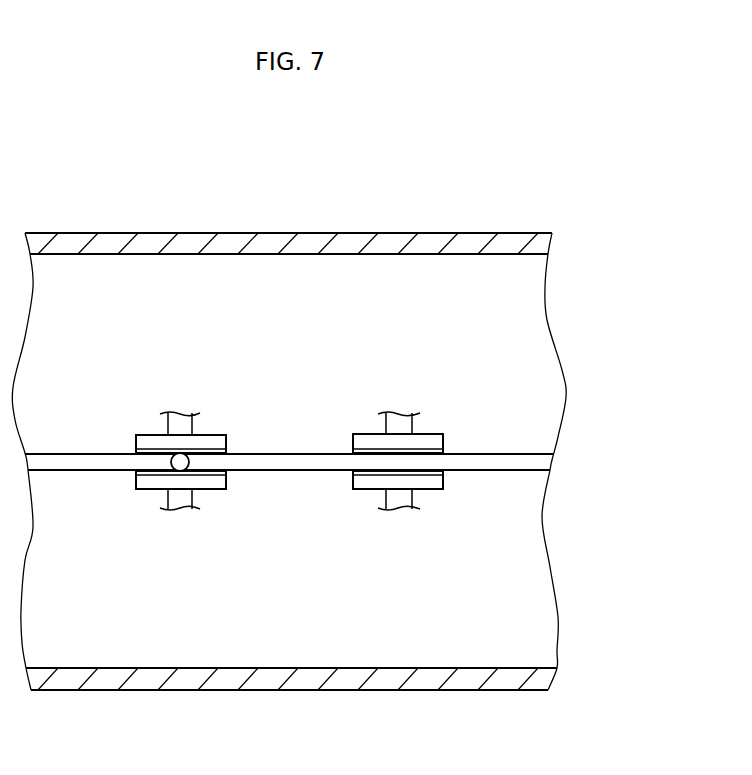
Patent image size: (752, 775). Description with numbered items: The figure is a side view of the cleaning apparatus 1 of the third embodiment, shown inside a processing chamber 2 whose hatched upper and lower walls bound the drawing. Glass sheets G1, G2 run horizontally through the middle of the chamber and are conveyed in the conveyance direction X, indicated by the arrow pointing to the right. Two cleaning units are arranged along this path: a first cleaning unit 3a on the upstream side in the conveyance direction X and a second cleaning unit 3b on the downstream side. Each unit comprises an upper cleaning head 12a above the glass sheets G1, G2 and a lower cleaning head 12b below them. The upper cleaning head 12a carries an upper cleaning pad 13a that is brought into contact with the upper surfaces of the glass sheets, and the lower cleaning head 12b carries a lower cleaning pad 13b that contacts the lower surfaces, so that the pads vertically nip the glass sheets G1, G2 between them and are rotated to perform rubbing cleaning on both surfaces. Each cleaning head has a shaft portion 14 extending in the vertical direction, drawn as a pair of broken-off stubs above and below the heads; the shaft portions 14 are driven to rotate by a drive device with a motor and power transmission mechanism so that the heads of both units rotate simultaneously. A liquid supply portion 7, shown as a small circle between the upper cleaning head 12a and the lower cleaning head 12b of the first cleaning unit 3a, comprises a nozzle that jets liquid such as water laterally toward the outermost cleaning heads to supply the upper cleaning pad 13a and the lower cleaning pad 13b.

The cleaning apparatus 1 is at (458, 208).
The processing chamber 2 is at (327, 233).
The first cleaning unit 3a is at (180, 376).
The second cleaning unit 3b is at (398, 376).
The liquid supply portion 7 is at (190, 462).
The upper cleaning head 12a is at (143, 425).
The lower cleaning head 12b is at (140, 497).
The upper cleaning pad 13a is at (146, 451).
The lower cleaning pad 13b is at (146, 474).
The shaft portion 14 is at (198, 425).
The glass sheet G1 is at (343, 443).
The glass sheet G2 is at (514, 453).
The conveyance direction X is at (531, 484).